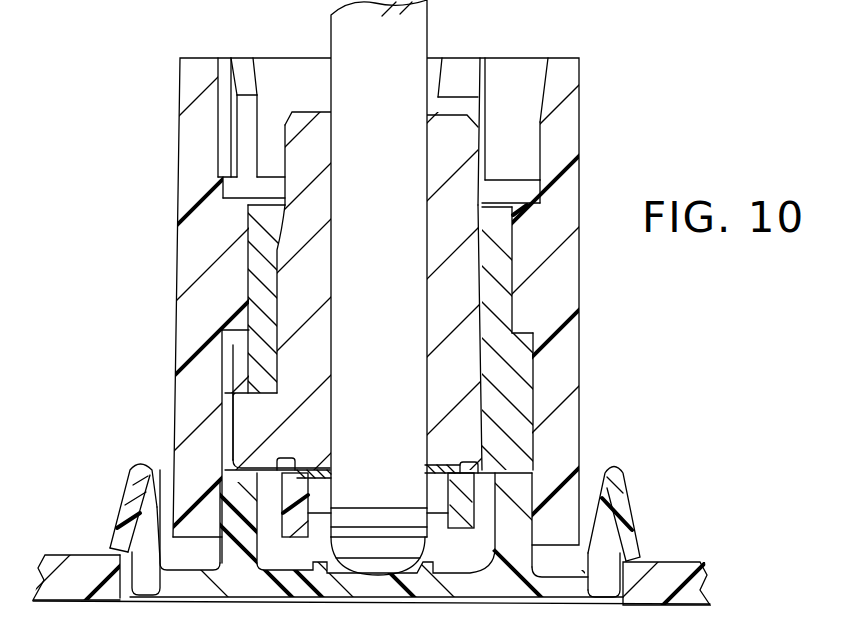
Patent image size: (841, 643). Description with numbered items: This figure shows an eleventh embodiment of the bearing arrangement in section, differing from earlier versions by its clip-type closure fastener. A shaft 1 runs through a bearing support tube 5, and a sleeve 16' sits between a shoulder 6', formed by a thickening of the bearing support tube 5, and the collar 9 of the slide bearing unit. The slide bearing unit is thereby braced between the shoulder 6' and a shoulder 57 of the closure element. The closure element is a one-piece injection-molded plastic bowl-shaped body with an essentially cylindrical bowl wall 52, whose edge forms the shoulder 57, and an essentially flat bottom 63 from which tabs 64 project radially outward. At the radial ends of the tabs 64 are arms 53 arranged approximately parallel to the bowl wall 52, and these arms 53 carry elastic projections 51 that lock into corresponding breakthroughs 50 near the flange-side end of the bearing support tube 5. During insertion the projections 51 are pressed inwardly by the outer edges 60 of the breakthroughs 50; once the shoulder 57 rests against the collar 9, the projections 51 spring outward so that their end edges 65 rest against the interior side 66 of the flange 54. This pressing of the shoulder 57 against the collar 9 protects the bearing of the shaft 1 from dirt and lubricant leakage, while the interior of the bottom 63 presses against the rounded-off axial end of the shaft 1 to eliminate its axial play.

The shaft 1 is at (423, 42).
The bearing support tube 5 is at (565, 370).
The sleeve 16' is at (216, 299).
The shoulder 6' is at (367, 321).
The collar 9 is at (252, 403).
The shoulder 57 is at (535, 460).
The bowl wall 52 is at (222, 585).
The tabs 64 is at (558, 585).
The bottom 63 is at (333, 585).
The breakthroughs 50 is at (362, 531).
The elastic projections 51 is at (122, 514).
The arms 53 is at (145, 575).
The flange 54 is at (635, 530).
The outer edges 60 is at (128, 590).
The end edges 65 is at (105, 545).
The interior side 66 is at (85, 555).